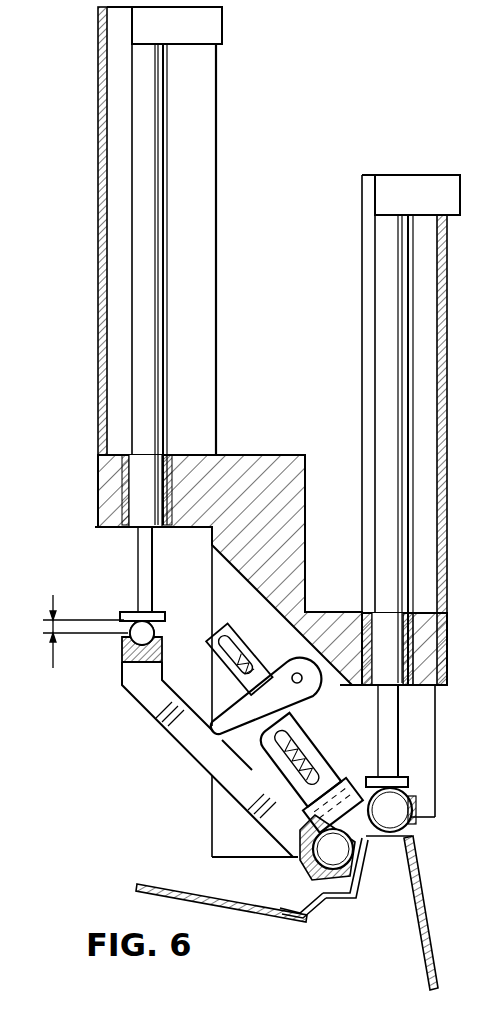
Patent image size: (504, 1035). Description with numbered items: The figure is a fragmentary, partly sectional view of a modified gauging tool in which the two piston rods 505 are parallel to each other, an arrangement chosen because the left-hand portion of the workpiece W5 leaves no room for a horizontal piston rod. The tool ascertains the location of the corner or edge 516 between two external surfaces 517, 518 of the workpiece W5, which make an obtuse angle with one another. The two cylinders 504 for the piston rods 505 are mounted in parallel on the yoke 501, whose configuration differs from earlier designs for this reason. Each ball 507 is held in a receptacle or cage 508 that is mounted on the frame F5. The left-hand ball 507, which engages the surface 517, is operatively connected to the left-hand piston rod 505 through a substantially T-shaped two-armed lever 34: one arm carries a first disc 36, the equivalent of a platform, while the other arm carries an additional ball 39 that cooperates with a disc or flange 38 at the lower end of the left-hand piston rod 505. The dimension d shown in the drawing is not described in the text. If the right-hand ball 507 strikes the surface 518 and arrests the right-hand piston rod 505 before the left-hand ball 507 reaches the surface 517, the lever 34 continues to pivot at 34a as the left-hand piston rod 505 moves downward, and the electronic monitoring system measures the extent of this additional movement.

The cylinder 504 is at (166, 352).
The yoke 501 is at (271, 455).
The piston rod 505 is at (139, 553).
The disc or flange 38 is at (120, 613).
The additional ball 39 is at (122, 656).
The distance d is at (46, 622).
The two-armed lever 34 is at (206, 766).
The pivot 34a is at (302, 678).
The first disc 36 is at (306, 870).
The receptacle or cage 508 is at (418, 796).
The external surface 518 is at (408, 834).
The corner or edge 516 is at (380, 842).
The external surface 517 is at (342, 906).
The ball 507 is at (292, 908).
The frame F5 is at (210, 820).
The workpiece W5 is at (440, 977).